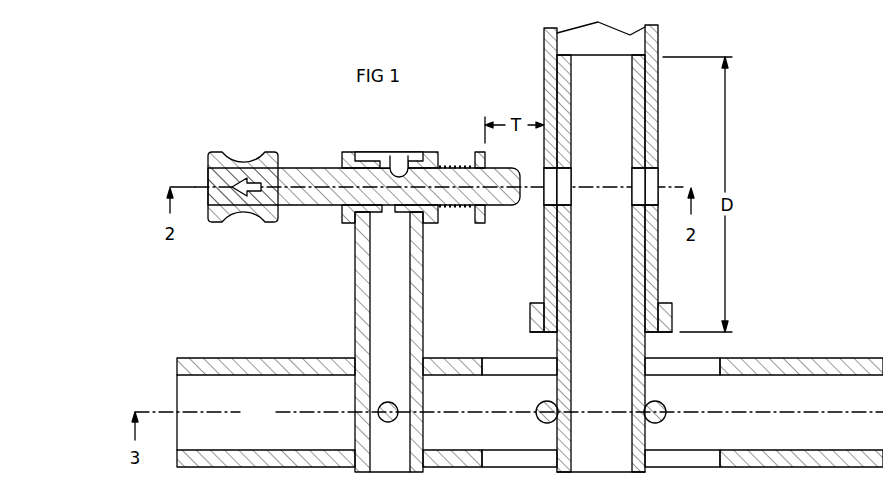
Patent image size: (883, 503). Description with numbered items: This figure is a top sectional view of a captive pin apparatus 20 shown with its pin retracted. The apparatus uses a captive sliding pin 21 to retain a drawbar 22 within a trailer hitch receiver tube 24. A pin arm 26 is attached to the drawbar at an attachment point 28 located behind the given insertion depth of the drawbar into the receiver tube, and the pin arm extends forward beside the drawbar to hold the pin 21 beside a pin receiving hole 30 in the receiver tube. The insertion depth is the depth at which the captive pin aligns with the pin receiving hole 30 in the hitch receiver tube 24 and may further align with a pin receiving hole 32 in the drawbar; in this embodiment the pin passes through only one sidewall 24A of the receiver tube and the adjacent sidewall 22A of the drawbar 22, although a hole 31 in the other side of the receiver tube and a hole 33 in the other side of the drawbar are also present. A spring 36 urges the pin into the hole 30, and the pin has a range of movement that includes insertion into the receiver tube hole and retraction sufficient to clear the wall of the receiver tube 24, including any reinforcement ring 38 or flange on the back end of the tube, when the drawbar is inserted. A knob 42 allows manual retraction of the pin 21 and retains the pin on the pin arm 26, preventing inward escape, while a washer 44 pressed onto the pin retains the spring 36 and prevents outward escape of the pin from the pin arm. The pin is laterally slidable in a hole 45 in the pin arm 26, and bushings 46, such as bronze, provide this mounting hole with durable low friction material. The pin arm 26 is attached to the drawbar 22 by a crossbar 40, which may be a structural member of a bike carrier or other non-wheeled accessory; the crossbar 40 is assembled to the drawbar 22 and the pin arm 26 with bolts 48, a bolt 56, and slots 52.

The apparatus 20 is at (222, 277).
The knob 42 is at (225, 162).
The captive sliding pin 21 is at (309, 170).
The bushings 46 is at (348, 152).
The hole 45 is at (398, 157).
The spring 36 is at (456, 165).
The washer 44 is at (486, 214).
The trailer hitch receiver tube 24 is at (651, 119).
The sidewall of the receiver tube 24A is at (549, 83).
The drawbar 22 is at (601, 263).
The sidewall of the drawbar 22A is at (565, 98).
The pin receiving hole 30 is at (548, 228).
The pin receiving hole 32 is at (564, 207).
The hole 33 is at (641, 166).
The hole 31 is at (650, 166).
The reinforcement ring 38 is at (535, 303).
The attachment point 28 is at (542, 350).
The pin arm 26 is at (357, 297).
The crossbar 40 is at (530, 412).
The slots 52 is at (525, 457).
The bolt 56 is at (388, 422).
The bolts 48 is at (540, 403).